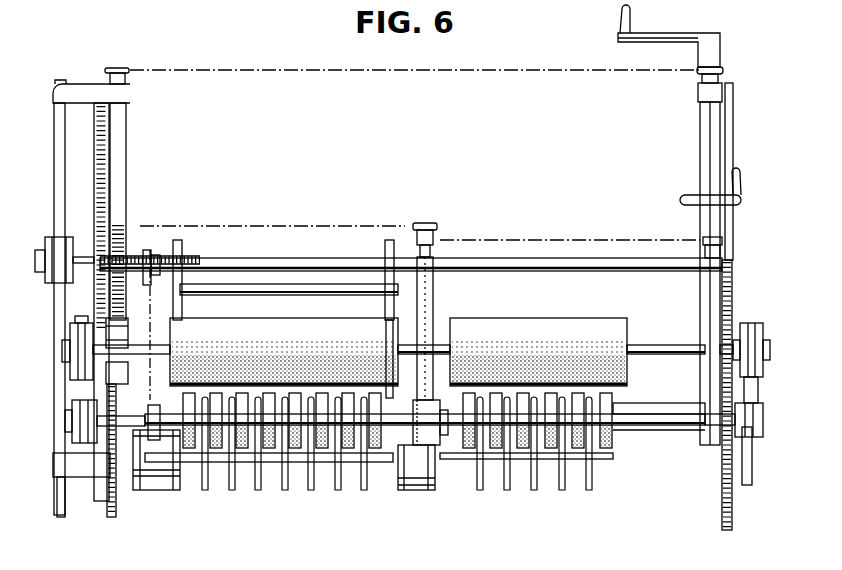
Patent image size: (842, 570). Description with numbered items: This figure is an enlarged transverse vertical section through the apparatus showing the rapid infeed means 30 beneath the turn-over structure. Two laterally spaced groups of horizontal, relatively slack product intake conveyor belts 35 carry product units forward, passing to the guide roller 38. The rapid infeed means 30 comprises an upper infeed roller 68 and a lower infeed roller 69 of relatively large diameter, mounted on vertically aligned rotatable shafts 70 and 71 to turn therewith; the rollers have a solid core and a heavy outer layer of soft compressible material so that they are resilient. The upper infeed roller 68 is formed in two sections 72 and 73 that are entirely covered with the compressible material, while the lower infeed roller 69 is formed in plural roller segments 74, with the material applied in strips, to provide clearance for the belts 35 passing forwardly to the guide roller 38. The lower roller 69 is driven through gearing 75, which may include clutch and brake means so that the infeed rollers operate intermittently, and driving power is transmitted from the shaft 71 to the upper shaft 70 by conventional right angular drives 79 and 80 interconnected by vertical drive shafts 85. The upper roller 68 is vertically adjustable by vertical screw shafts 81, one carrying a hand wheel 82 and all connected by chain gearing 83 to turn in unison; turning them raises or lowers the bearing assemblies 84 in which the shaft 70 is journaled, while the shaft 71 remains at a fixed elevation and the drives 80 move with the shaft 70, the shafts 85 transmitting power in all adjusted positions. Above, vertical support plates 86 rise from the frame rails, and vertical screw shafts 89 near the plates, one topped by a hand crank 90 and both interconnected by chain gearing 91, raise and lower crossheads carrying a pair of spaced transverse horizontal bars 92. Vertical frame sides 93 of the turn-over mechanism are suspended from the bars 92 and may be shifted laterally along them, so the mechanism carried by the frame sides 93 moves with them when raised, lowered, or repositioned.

The rapid infeed means 30 is at (672, 316).
The product intake conveyor belts 35 is at (287, 486).
The roller 38 is at (455, 440).
The upper infeed roller 68 is at (298, 330).
The lower infeed roller 69 is at (328, 457).
The shaft 70 is at (664, 349).
The shaft 71 is at (665, 428).
The section 72 is at (362, 324).
The section 73 is at (566, 322).
The roller segments 74 is at (238, 466).
The gearing 75 is at (150, 433).
The right angular drive 79 is at (72, 437).
The right angular drive 80 is at (70, 356).
The vertical screw shafts 81 is at (118, 252).
The hand wheel 82 is at (740, 197).
The chain gearing 83 is at (311, 226).
The bearing assemblies 84 is at (108, 330).
The vertical drive shafts 85 is at (75, 477).
The vertical support plates 86 is at (96, 160).
The vertical screw shafts 89 is at (106, 79).
The hand crank 90 is at (673, 40).
The chain gearing 91 is at (455, 73).
The transverse horizontal bars 92 is at (616, 274).
The vertical frame sides 93 is at (183, 248).